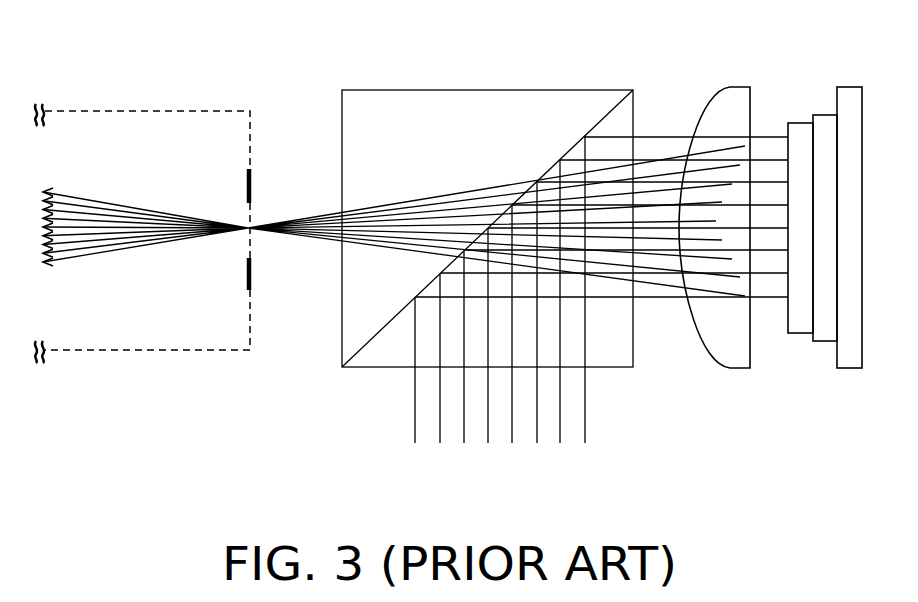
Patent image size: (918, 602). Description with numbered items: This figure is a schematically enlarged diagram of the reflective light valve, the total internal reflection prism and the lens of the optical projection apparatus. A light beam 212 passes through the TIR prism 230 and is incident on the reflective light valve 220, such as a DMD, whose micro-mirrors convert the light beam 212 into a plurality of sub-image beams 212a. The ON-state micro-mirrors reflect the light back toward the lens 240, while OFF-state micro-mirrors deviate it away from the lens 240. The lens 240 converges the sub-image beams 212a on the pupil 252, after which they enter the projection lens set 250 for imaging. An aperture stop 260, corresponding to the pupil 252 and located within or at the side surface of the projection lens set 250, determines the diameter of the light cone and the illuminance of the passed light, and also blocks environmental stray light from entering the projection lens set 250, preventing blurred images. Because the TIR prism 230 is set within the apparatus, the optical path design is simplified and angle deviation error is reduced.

The projection lens set 250 is at (213, 111).
The pupil 252 is at (253, 223).
The aperture stop 260 is at (265, 184).
The total internal reflection prism 230 is at (513, 90).
The light beam 212 is at (488, 425).
The sub-image beams 212a is at (465, 187).
The lens 240 is at (735, 86).
The reflective light valve 220 is at (852, 86).